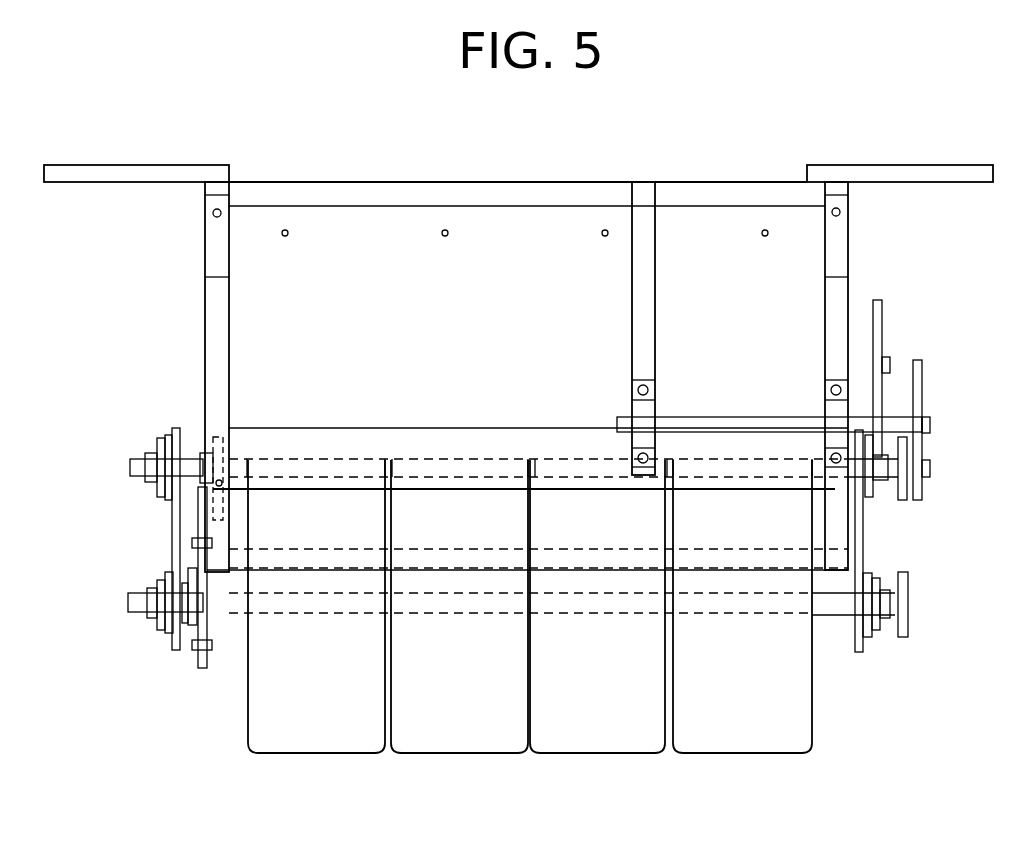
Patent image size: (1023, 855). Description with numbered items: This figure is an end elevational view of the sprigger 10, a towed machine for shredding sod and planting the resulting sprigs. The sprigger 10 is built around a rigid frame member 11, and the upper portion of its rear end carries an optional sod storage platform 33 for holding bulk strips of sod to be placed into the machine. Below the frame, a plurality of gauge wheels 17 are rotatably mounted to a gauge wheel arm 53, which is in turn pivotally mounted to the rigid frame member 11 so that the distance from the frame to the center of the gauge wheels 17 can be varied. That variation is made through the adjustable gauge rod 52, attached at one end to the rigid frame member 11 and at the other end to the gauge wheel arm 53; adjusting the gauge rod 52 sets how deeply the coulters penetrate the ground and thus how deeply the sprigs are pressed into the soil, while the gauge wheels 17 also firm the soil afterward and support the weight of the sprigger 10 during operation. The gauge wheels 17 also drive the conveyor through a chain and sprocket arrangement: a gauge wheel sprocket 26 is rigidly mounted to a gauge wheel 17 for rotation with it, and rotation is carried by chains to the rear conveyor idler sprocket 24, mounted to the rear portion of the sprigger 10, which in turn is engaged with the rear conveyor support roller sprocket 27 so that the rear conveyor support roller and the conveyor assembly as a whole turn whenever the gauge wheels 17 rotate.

The sprigger 10 is at (760, 145).
The rigid frame member 11 is at (208, 348).
The gauge wheels 17 is at (311, 725).
The rear conveyor idler sprocket 24 is at (925, 385).
The gauge wheel sprocket 26 is at (905, 615).
The rear conveyor support roller sprocket 27 is at (878, 304).
The sod storage platform 33 is at (94, 167).
The gauge rod 52 is at (203, 668).
The gauge wheel arm 53 is at (175, 527).